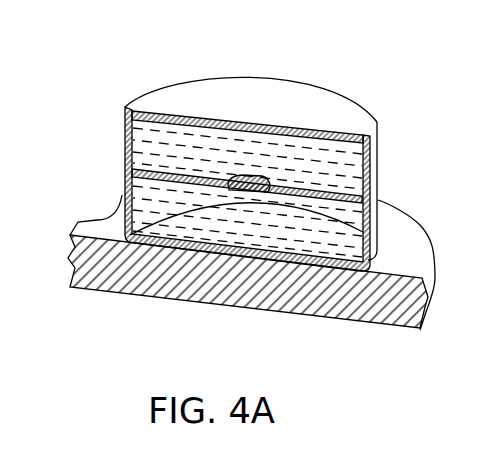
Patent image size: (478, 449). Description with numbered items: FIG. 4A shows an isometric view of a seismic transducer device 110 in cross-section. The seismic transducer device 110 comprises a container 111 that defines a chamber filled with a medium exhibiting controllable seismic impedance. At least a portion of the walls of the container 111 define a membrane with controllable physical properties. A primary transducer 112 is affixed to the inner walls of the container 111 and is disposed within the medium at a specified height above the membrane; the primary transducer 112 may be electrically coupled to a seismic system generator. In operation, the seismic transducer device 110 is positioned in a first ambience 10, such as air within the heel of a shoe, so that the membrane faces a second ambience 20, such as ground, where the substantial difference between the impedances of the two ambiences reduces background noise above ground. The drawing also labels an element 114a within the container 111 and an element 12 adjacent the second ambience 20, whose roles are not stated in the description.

The first ambience 10 is at (93, 88).
The seismic transducer device 110 is at (194, 55).
The container 111 is at (366, 156).
The primary transducer 112 is at (240, 176).
The wavelength conversion layer 114a is at (133, 171).
The second ambience 20 is at (138, 290).
The encapsulant 12 is at (274, 286).